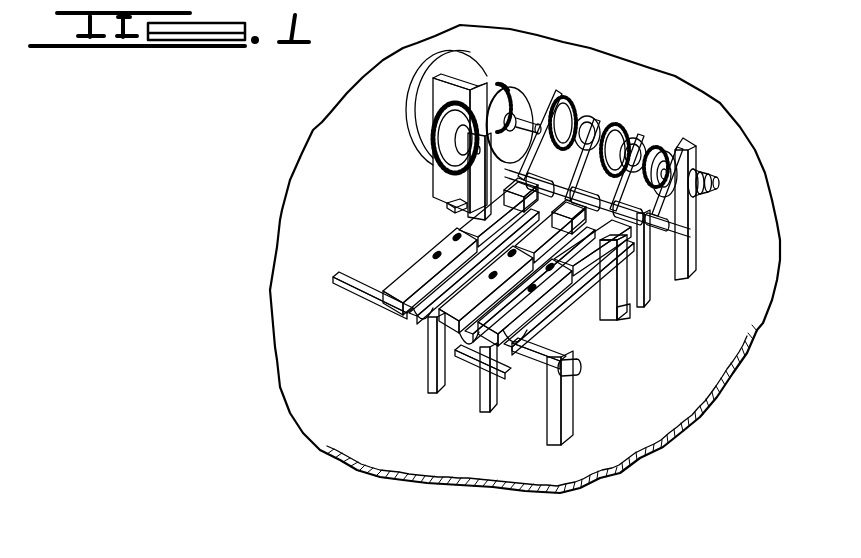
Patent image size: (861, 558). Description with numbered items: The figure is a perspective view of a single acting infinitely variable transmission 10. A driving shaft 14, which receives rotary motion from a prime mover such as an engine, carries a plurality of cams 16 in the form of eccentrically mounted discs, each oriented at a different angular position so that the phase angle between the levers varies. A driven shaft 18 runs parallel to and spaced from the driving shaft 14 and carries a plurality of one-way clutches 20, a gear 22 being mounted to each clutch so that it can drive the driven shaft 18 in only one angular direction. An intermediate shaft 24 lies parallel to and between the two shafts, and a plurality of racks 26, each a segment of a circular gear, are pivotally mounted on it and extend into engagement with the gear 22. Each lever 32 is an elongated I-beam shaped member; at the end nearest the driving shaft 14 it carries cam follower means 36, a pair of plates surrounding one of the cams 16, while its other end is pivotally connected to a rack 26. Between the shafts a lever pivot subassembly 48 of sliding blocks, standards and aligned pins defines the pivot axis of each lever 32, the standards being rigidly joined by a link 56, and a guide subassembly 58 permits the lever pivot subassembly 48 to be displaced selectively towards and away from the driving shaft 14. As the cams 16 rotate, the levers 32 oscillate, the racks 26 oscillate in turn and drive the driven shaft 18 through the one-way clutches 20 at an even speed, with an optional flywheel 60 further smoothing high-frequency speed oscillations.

The single acting infinitely variable transmission 10 is at (514, 311).
The driving shaft 14 is at (347, 297).
The cams 16 is at (405, 330).
The driven shaft 18 is at (714, 188).
The one-way clutches 20 is at (590, 116).
The gear 22 is at (577, 113).
The intermediate shaft 24 is at (630, 133).
The racks 26 is at (655, 160).
The lever 32 is at (460, 220).
The cam follower means 36 is at (398, 275).
The lever pivot subassembly 48 is at (615, 270).
The link 56 is at (620, 315).
The guide subassembly 58 is at (583, 310).
The flywheel 60 is at (398, 123).